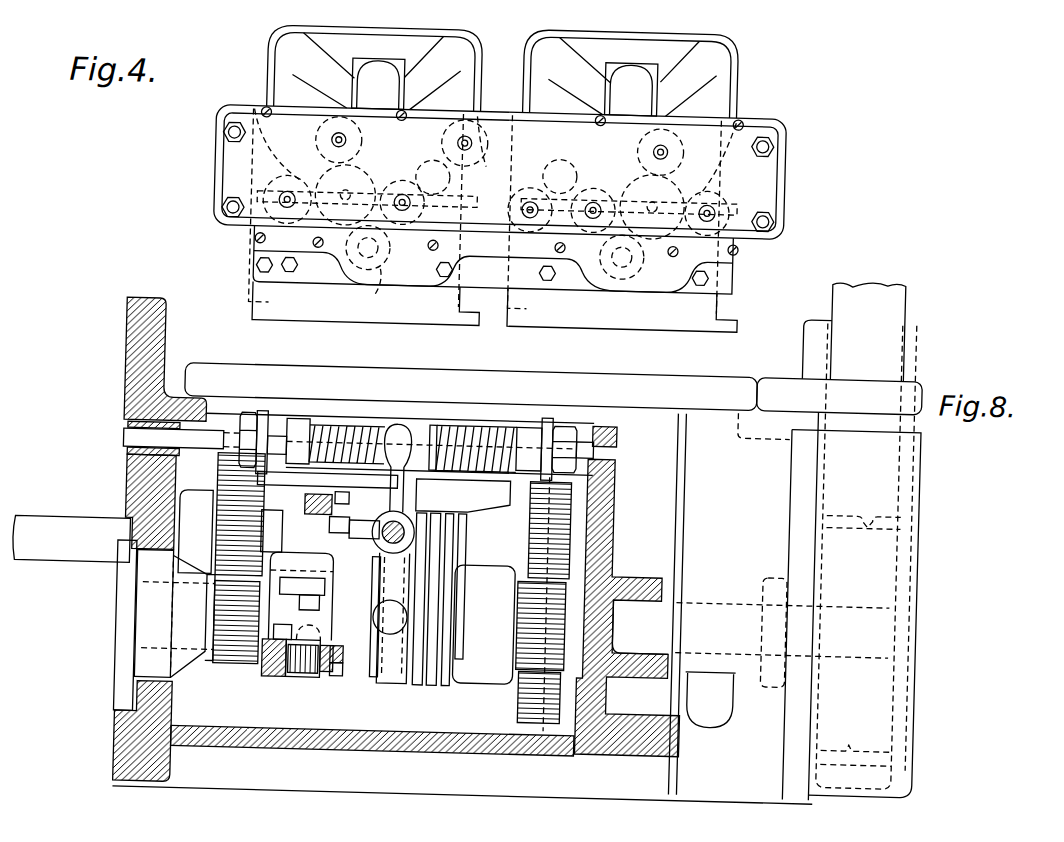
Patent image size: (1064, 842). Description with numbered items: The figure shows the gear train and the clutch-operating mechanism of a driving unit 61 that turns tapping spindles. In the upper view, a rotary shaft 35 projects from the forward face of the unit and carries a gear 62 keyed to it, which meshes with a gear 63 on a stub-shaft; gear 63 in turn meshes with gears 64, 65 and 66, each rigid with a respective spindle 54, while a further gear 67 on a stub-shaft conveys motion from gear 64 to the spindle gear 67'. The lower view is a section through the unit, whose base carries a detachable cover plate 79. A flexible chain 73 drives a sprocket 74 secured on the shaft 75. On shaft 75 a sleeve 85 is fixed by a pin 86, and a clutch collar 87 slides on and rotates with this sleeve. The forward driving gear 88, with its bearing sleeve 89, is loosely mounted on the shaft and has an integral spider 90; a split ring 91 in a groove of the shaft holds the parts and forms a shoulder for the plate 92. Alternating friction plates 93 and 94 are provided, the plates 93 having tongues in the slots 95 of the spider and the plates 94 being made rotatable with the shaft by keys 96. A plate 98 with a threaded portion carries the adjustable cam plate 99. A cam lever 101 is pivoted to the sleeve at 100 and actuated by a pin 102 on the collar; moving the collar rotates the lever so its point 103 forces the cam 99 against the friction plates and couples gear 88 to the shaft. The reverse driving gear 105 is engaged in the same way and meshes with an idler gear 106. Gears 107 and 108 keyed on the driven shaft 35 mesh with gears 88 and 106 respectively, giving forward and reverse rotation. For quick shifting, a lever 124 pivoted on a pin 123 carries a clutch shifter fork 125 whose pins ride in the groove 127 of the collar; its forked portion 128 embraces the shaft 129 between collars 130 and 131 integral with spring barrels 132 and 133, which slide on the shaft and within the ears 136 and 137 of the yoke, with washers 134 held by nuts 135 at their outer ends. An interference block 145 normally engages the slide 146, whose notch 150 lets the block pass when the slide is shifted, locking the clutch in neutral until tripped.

In FIG. 4, the spindle 54 is at (330, 141).
In FIG. 4, the gear 65 is at (363, 140).
In FIG. 4, the gear 67 is at (485, 167).
In FIG. 4, the spindle gear 67' is at (562, 147).
In FIG. 4, the gear 66 is at (408, 194).
In FIG. 4, the gear 64 is at (533, 197).
In FIG. 4, the gear 63 is at (318, 234).
In FIG. 4, the rotary shaft 35 is at (391, 257).
In FIG. 8, the rotary shaft 35 is at (71, 538).
In FIG. 4, the gear 62 is at (379, 294).
In FIG. 4, the driving unit 61 is at (495, 307).
In FIG. 8, the flexible chain 73 is at (853, 542).
In FIG. 8, the sprocket 74 is at (865, 507).
In FIG. 8, the shaft 75 is at (606, 582).
In FIG. 8, the detachable cover plate 79 is at (554, 387).
In FIG. 8, the sleeve 85 is at (460, 660).
In FIG. 8, the pin 86 is at (394, 690).
In FIG. 8, the clutch collar 87 is at (448, 687).
In FIG. 8, the forward driving gear 88 is at (212, 678).
In FIG. 8, the bearing sleeve 89 is at (245, 672).
In FIG. 8, the spider 90 is at (272, 684).
In FIG. 8, the split ring 91 is at (284, 636).
In FIG. 8, the plate 92 is at (292, 683).
In FIG. 8, the friction plate 93 is at (306, 684).
In FIG. 8, the friction plate 94 is at (310, 633).
In FIG. 8, the slot 95 is at (300, 690).
In FIG. 8, the key 96 is at (306, 596).
In FIG. 8, the plate 98 is at (343, 682).
In FIG. 8, the adjustable cam plate 99 is at (340, 668).
In FIG. 8, the pivot 100 is at (345, 606).
In FIG. 8, the cam lever 101 is at (441, 628).
In FIG. 8, the pin 102 is at (427, 604).
In FIG. 8, the point 103 is at (377, 672).
In FIG. 8, the reverse driving gear 105 is at (518, 642).
In FIG. 8, the idler gear 106 is at (521, 713).
In FIG. 8, the gear 107 is at (215, 487).
In FIG. 8, the gear 108 is at (528, 537).
In FIG. 8, the pin 123 is at (328, 528).
In FIG. 8, the lever 124 is at (330, 490).
In FIG. 8, the clutch shifter fork 125 is at (296, 575).
In FIG. 8, the groove 127 is at (386, 690).
In FIG. 8, the forked portion 128 is at (392, 427).
In FIG. 8, the shaft 129 is at (181, 437).
In FIG. 8, the collar 130 is at (430, 427).
In FIG. 8, the collar 131 is at (380, 427).
In FIG. 8, the spring barrel 132 is at (470, 427).
In FIG. 8, the spring barrel 133 is at (331, 430).
In FIG. 8, the washer 134 is at (260, 417).
In FIG. 8, the nut 135 is at (243, 419).
In FIG. 8, the projecting ear 136 is at (296, 424).
In FIG. 8, the projecting ear 137 is at (526, 427).
In FIG. 8, the interference block 145 is at (348, 536).
In FIG. 8, the slide 146 is at (303, 507).
In FIG. 8, the notch 150 is at (341, 497).